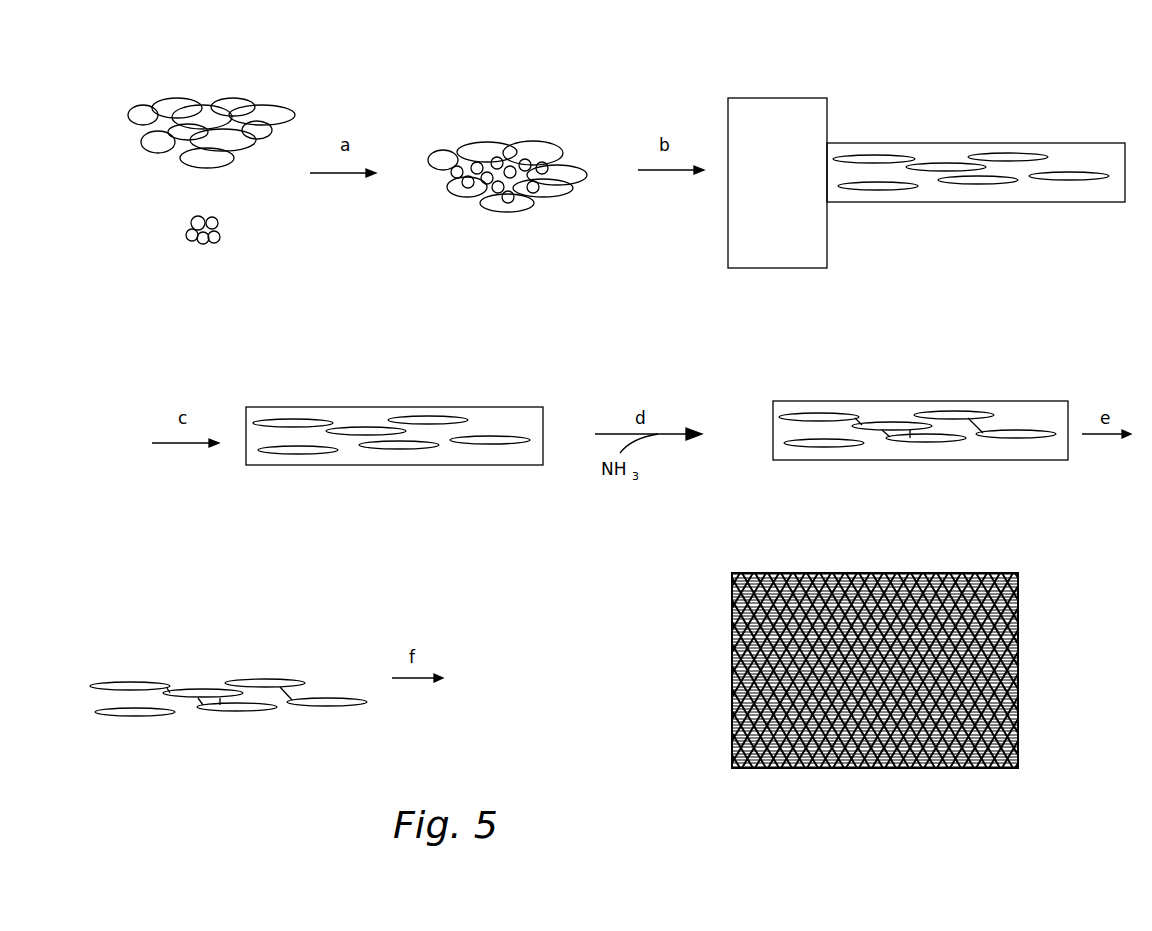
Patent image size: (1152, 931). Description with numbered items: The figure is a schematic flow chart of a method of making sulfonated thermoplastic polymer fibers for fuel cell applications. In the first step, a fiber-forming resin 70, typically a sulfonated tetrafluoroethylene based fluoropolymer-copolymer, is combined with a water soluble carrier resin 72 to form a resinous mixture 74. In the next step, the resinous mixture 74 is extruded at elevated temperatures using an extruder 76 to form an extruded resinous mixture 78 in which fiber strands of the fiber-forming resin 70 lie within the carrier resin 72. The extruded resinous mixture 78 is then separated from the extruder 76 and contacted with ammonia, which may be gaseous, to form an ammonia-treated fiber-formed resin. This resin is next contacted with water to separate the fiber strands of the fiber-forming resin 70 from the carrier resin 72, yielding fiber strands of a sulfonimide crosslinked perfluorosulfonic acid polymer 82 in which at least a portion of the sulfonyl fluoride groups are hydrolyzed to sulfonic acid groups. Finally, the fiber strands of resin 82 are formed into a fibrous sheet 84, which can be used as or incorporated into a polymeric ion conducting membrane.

The fiber-forming resin 70 is at (198, 237).
The water soluble carrier resin 72 is at (147, 115).
The resinous mixture 74 is at (512, 150).
The extruder 76 is at (733, 207).
The extruded resinous mixture 78 is at (1040, 70).
The sulfonimide crosslinked perfluorosulfonic acid polymer 82 is at (140, 685).
The fibrous sheet 84 is at (715, 655).